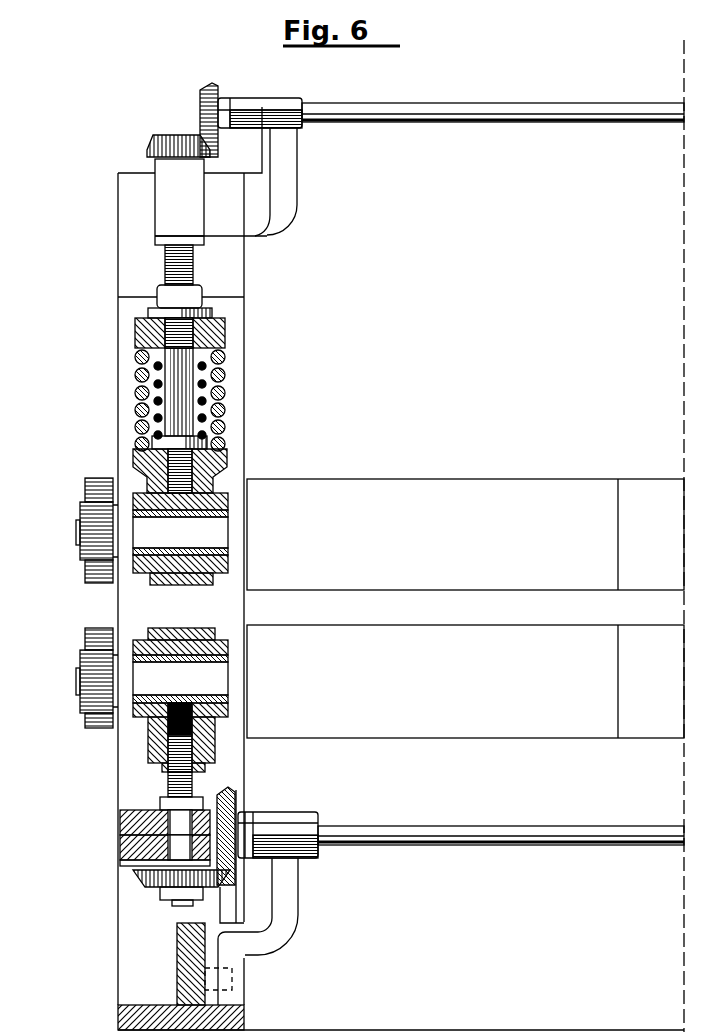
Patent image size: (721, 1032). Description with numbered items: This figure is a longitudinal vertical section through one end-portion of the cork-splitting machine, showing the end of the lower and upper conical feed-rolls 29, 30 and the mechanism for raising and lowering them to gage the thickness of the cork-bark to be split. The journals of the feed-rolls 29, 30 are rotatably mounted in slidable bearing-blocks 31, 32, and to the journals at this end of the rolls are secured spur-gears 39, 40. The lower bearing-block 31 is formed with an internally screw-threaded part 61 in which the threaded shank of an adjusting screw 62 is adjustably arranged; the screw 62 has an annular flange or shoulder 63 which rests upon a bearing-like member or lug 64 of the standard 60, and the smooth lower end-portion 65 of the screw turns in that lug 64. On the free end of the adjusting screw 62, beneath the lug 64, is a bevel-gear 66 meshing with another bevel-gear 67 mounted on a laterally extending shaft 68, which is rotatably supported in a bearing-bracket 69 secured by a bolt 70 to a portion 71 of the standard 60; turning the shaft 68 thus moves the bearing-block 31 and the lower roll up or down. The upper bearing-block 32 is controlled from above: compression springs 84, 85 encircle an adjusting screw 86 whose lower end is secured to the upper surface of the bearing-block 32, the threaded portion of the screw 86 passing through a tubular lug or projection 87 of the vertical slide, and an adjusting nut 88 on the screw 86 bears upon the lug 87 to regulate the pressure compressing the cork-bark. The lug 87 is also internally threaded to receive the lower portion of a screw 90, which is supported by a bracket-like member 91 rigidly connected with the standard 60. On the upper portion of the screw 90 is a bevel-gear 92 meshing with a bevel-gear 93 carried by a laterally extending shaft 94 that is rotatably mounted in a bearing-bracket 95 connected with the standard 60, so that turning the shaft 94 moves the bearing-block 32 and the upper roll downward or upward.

The lower conical feed-roll 29 is at (458, 740).
The upper conical feed-roll 30 is at (489, 487).
The bearing-block 31 is at (236, 632).
The bearing-block 32 is at (216, 472).
The spur-gear 39 is at (97, 632).
The spur-gear 40 is at (97, 480).
The standard 60 is at (125, 228).
The internally screw-threaded part 61 is at (206, 735).
The adjusting screw 62 is at (190, 790).
The annular flange or shoulder 63 is at (166, 800).
The bearing-like member or lug 64 is at (142, 816).
The smooth lower end-portion 65 is at (140, 831).
The bevel-gear 66 is at (142, 882).
The bevel-gear 67 is at (226, 822).
The laterally extending shaft 68 is at (460, 847).
The bearing-bracket 69 is at (292, 920).
The bolt 70 is at (232, 978).
The portion of the standard 71 is at (180, 944).
The compression spring 84 is at (140, 405).
The compression spring 85 is at (224, 380).
The adjusting screw 86 is at (198, 260).
The lug or projection 87 is at (222, 338).
The adjusting nut 88 is at (200, 297).
The screw 90 is at (175, 268).
The bracket-like member 91 is at (172, 185).
The bevel-gear 92 is at (172, 137).
The bevel-gear 93 is at (207, 94).
The laterally extending shaft 94 is at (488, 115).
The bearing-bracket 95 is at (296, 128).